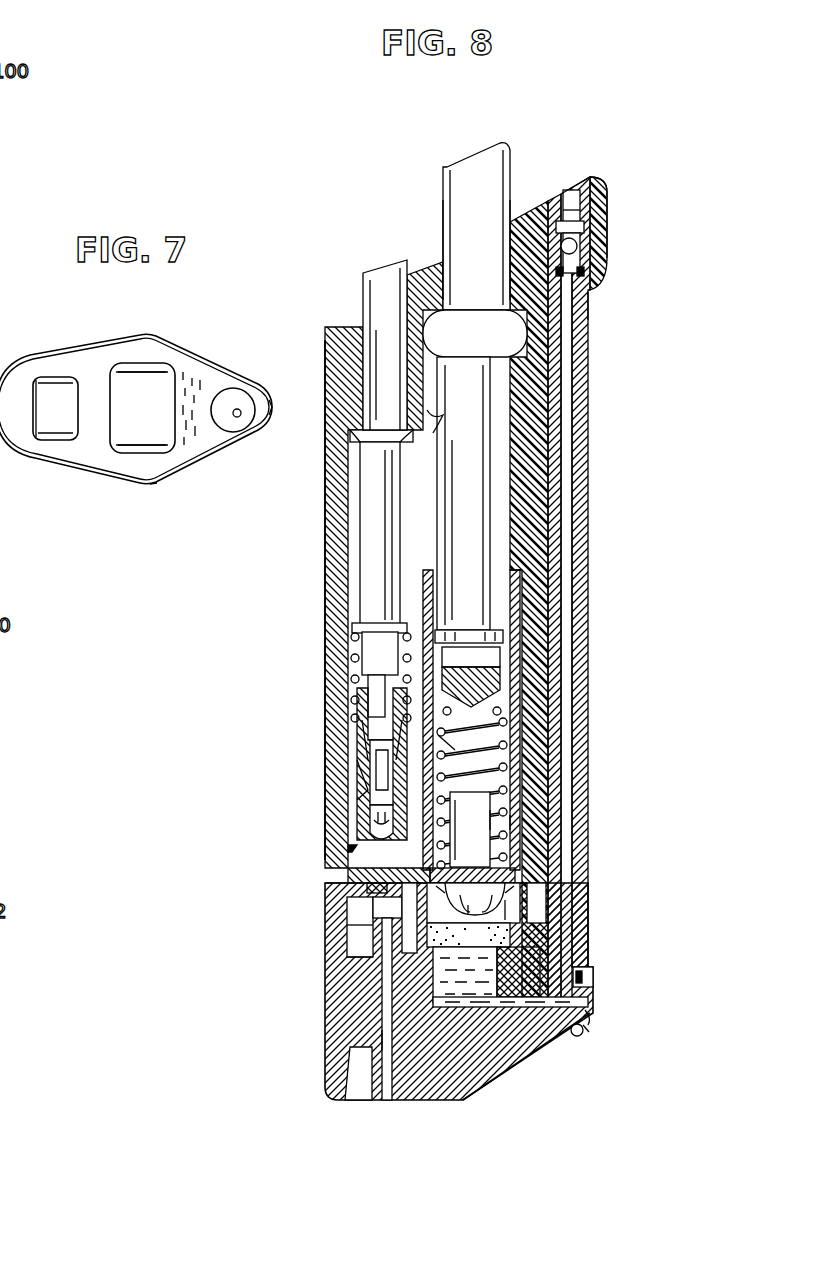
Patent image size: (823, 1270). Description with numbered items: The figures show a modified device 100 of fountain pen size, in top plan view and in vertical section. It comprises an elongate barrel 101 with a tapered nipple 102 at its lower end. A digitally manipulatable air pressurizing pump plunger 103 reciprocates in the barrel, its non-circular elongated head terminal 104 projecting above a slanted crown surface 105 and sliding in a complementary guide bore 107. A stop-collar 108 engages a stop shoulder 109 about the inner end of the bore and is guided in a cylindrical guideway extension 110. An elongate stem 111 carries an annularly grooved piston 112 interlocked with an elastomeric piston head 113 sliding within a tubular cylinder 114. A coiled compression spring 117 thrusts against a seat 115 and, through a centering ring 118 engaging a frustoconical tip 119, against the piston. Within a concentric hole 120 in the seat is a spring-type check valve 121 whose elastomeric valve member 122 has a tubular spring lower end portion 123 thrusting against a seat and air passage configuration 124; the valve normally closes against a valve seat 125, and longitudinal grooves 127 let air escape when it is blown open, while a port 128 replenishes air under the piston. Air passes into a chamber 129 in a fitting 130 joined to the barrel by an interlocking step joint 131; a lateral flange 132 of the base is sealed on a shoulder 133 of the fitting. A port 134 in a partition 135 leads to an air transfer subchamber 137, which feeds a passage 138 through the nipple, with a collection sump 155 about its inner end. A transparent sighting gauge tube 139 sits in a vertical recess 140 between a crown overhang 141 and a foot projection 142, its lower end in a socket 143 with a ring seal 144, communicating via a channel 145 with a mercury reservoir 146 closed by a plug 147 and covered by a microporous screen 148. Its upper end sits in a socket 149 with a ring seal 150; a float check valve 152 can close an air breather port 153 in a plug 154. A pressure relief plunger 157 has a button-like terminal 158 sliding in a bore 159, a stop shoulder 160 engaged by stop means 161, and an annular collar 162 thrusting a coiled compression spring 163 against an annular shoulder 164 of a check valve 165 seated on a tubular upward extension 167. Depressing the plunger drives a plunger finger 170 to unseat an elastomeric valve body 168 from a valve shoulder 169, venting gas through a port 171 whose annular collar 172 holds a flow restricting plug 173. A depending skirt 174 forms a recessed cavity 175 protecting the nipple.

In FIG. 7, the modified form of the device 100 is at (42, 352).
In FIG. 8, the modified form of the device 100 is at (323, 313).
In FIG. 7, the elongate barrel 101 is at (157, 483).
In FIG. 8, the elongate barrel 101 is at (323, 533).
In FIG. 8, the tapered nipple 102 is at (367, 1087).
In FIG. 7, the air pressurizing pump plunger 103 is at (173, 367).
In FIG. 8, the air pressurizing pump plunger 103 is at (512, 165).
In FIG. 7, the elongated head terminal 104 is at (160, 426).
In FIG. 8, the elongated head terminal 104 is at (473, 160).
In FIG. 7, the crown surface 105 is at (92, 427).
In FIG. 8, the crown surface 105 is at (430, 268).
In FIG. 8, the guide bore 107 is at (443, 293).
In FIG. 8, the stop-collar 108 is at (470, 357).
In FIG. 8, the stop shoulder 109 is at (430, 327).
In FIG. 8, the guideway extension 110 is at (433, 420).
In FIG. 8, the elongate stem 111 is at (458, 505).
In FIG. 8, the piston 112 is at (505, 638).
In FIG. 8, the piston head 113 is at (507, 680).
In FIG. 8, the tubular cylinder 114 is at (505, 593).
In FIG. 8, the seat 115 is at (347, 870).
In FIG. 8, the coiled compression spring 117 is at (507, 773).
In FIG. 8, the centering ring 118 is at (507, 700).
In FIG. 8, the frustoconical tip 119 is at (507, 715).
In FIG. 8, the concentric hole 120 is at (455, 845).
In FIG. 8, the spring-type check valve 121 is at (507, 813).
In FIG. 8, the elastomeric valve member 122 is at (483, 845).
In FIG. 8, the tubular spring lower end portion 123 is at (480, 892).
In FIG. 8, the seat and air passage configuration 124 is at (540, 947).
In FIG. 8, the valve seat 125 is at (510, 822).
In FIG. 8, the longitudinal grooves 127 is at (523, 852).
In FIG. 8, the port 128 is at (447, 755).
In FIG. 8, the chamber 129 is at (510, 920).
In FIG. 8, the fitting 130 is at (333, 1003).
In FIG. 8, the interlocking step joint 131 is at (330, 850).
In FIG. 8, the lateral flange 132 is at (367, 885).
In FIG. 8, the shoulder 133 is at (330, 890).
In FIG. 8, the port 134 is at (533, 915).
In FIG. 8, the partition 135 is at (468, 936).
In FIG. 8, the air transfer subchamber 137 is at (360, 947).
In FIG. 8, the passage 138 is at (387, 1040).
In FIG. 8, the transparent sighting gauge tube 139 is at (585, 405).
In FIG. 8, the vertical recess 140 is at (548, 428).
In FIG. 7, the crown overhang 141 is at (293, 427).
In FIG. 8, the crown overhang 141 is at (601, 207).
In FIG. 8, the foot projection 142 is at (575, 1036).
In FIG. 8, the socket 143 is at (588, 1020).
In FIG. 8, the ring seal 144 is at (588, 1003).
In FIG. 8, the channel 145 is at (510, 1020).
In FIG. 8, the mercury reservoir 146 is at (463, 993).
In FIG. 8, the plug 147 is at (583, 1033).
In FIG. 8, the microporous membrane or screen 148 is at (577, 980).
In FIG. 8, the socket 149 is at (593, 300).
In FIG. 8, the ring seal 150 is at (584, 277).
In FIG. 8, the float check valve 152 is at (580, 247).
In FIG. 7, the air breather port 153 is at (238, 416).
In FIG. 8, the air breather port 153 is at (572, 190).
In FIG. 8, the plug 154 is at (588, 177).
In FIG. 8, the collection sump 155 is at (357, 970).
In FIG. 8, the pressure relief plunger 157 is at (584, 230).
In FIG. 7, the button-like terminal 158 is at (53, 428).
In FIG. 8, the button-like terminal 158 is at (383, 267).
In FIG. 7, the bore 159 is at (33, 418).
In FIG. 8, the bore 159 is at (367, 323).
In FIG. 8, the stop shoulder 160 is at (350, 433).
In FIG. 8, the stop means 161 is at (383, 447).
In FIG. 8, the annular collar 162 is at (352, 628).
In FIG. 8, the coiled compression spring 163 is at (350, 658).
In FIG. 8, the annular shoulder 164 is at (352, 728).
In FIG. 8, the check valve 165 is at (360, 740).
In FIG. 8, the tubular upward extension 167 is at (353, 757).
In FIG. 8, the elastomeric valve body 168 is at (378, 785).
In FIG. 8, the valve shoulder 169 is at (370, 800).
In FIG. 8, the plunger finger 170 is at (378, 680).
In FIG. 8, the port 171 is at (373, 903).
In FIG. 8, the annular collar 172 is at (353, 923).
In FIG. 8, the flow restricting plug 173 is at (396, 909).
In FIG. 8, the depending skirt 174 is at (465, 1100).
In FIG. 8, the recessed cavity 175 is at (357, 1073).